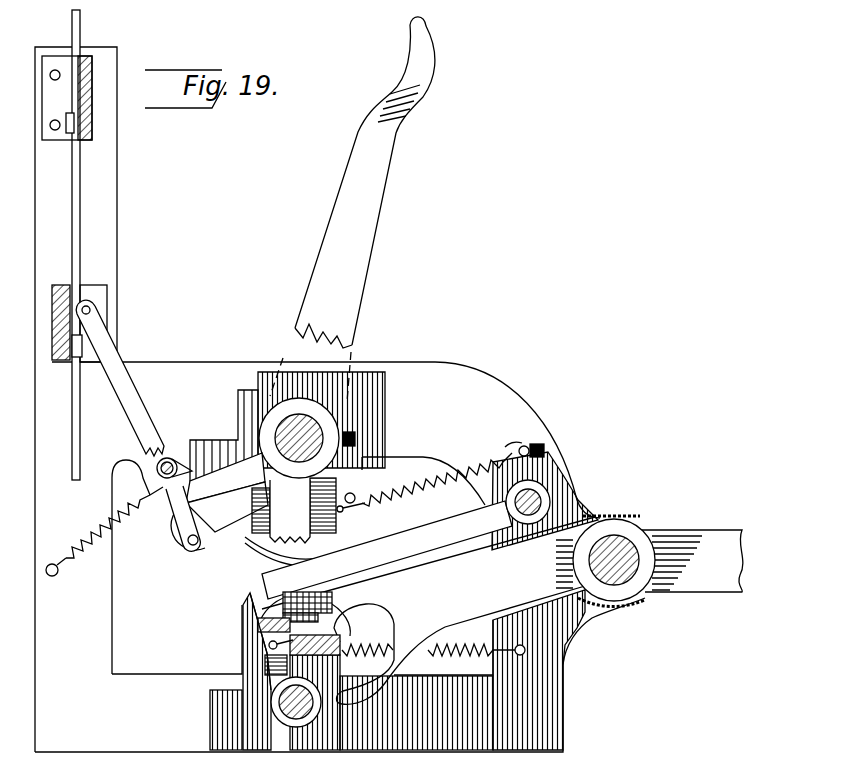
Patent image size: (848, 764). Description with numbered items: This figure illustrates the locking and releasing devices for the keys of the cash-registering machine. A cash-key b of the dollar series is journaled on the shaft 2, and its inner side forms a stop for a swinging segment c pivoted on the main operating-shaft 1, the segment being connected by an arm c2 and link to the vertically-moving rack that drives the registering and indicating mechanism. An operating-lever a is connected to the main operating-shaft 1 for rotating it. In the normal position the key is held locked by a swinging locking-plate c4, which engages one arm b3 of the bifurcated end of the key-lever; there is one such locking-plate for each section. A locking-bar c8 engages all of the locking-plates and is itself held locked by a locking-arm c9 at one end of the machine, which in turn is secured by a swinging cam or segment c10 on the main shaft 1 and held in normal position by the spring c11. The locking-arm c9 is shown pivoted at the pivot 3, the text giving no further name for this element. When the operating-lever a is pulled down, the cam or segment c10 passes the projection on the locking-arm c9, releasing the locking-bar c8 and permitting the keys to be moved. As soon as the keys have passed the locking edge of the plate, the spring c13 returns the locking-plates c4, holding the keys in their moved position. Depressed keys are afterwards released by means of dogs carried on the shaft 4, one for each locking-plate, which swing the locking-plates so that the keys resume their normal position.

The main operating-shaft 1 is at (312, 436).
The shaft 2 is at (622, 540).
The pivot of connecting bar 3 is at (545, 492).
The shaft 4 is at (320, 716).
The operating-lever a is at (373, 218).
The dollar series cash-key b is at (673, 538).
The arm of the bifurcated end of the key-lever b3 is at (317, 633).
The swinging segment c is at (261, 509).
The arm c2 is at (267, 557).
The swinging locking-plate c4 is at (270, 645).
The locking-bar c8 is at (262, 618).
The locking-arm c9 is at (415, 540).
The swinging cam or segment c10 is at (343, 511).
The spring c11 is at (453, 467).
The spring c13 is at (450, 660).